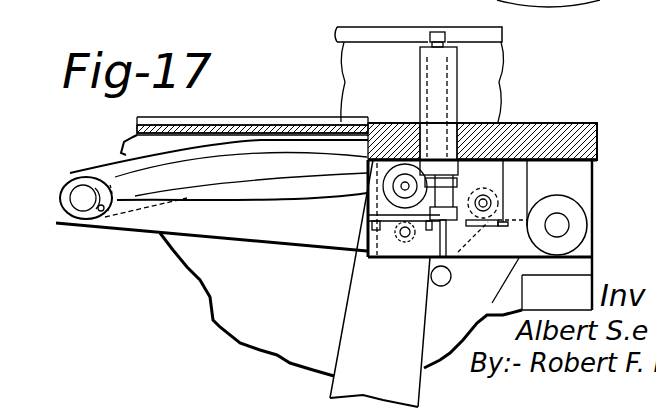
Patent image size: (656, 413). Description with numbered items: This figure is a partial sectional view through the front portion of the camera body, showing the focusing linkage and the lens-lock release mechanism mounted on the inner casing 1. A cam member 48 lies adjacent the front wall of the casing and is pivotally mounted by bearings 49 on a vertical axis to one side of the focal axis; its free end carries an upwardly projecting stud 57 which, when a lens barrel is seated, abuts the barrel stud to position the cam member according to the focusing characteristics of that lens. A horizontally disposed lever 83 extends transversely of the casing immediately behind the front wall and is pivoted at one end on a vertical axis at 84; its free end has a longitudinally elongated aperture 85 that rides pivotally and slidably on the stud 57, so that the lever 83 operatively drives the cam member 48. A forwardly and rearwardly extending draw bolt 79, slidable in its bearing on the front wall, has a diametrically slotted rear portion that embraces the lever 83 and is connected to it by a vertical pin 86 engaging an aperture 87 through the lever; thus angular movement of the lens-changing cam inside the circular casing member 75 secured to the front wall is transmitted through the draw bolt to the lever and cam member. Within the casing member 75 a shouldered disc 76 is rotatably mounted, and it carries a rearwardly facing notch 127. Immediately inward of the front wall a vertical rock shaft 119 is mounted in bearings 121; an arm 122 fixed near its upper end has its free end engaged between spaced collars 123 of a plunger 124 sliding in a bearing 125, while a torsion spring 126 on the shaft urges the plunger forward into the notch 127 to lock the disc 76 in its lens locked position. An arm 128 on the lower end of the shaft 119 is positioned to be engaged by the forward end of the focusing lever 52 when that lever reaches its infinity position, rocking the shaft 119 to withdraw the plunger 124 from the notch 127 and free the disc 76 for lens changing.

The inner casing 1 is at (574, 124).
The cam member 48 is at (113, 167).
The bearings 49 is at (407, 123).
The focusing lever 52 is at (346, 316).
The stud 57 is at (68, 222).
The circular casing member 75 is at (499, 78).
The shouldered disc 76 is at (497, 31).
The draw bolt 79 is at (366, 262).
The lever 83 is at (257, 236).
The pivot 84 is at (569, 225).
The elongated aperture 85 is at (93, 220).
The vertical pin 86 is at (410, 262).
The aperture 87 is at (392, 263).
The rock shaft 119 is at (492, 193).
The bearings 121 is at (490, 226).
The arm 122 is at (457, 226).
The spaced collars 123 is at (482, 128).
The plunger 124 is at (437, 32).
The bearing 125 is at (427, 83).
The torsion spring 126 is at (504, 126).
The notch 127 is at (430, 32).
The arm 128 is at (448, 287).